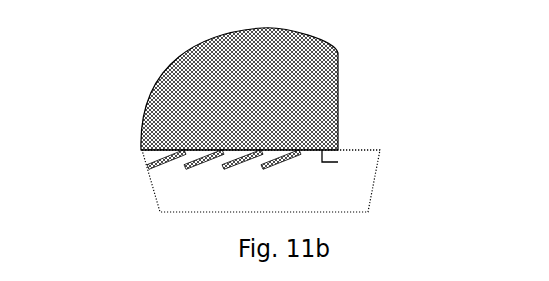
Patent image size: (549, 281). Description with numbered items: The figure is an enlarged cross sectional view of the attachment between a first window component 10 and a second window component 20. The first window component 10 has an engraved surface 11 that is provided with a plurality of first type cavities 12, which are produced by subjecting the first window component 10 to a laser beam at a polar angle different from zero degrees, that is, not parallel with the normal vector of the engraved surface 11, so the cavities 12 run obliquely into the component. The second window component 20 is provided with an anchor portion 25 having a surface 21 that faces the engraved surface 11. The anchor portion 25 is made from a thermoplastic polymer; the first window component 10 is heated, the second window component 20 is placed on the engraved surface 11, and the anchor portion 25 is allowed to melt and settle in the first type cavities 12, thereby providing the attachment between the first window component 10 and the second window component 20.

The first window component 10 is at (332, 191).
The engraved surface 11 is at (378, 152).
The first type cavity 12 is at (157, 167).
The second window component 20 is at (300, 107).
The surface 21 is at (338, 162).
The anchor portion 25 is at (157, 161).